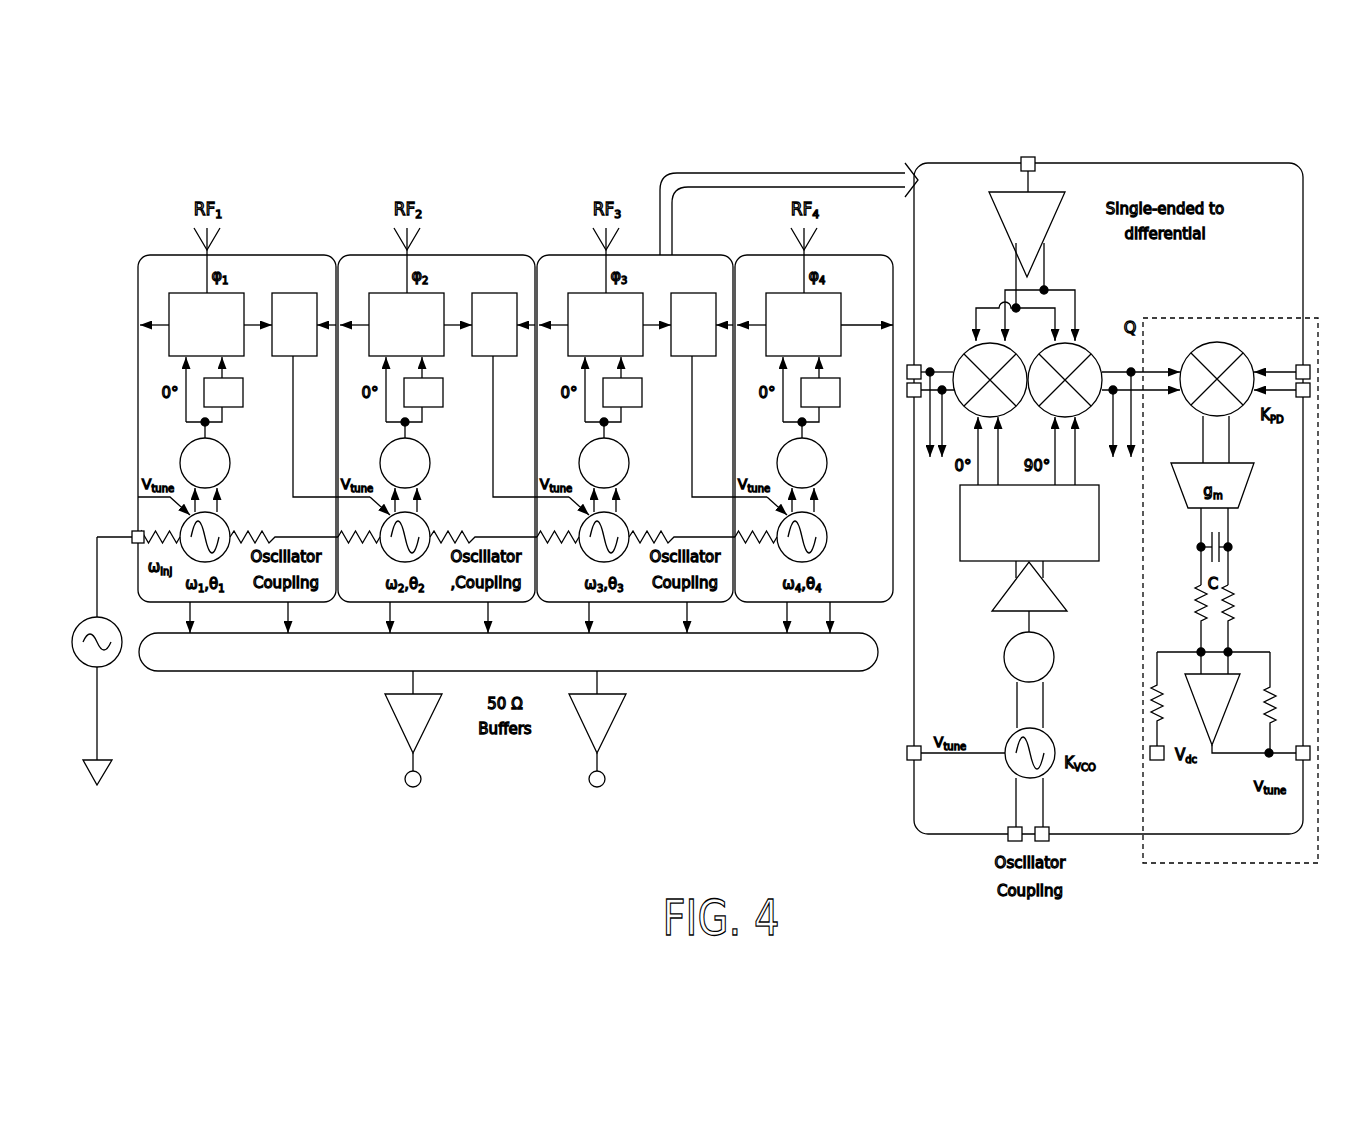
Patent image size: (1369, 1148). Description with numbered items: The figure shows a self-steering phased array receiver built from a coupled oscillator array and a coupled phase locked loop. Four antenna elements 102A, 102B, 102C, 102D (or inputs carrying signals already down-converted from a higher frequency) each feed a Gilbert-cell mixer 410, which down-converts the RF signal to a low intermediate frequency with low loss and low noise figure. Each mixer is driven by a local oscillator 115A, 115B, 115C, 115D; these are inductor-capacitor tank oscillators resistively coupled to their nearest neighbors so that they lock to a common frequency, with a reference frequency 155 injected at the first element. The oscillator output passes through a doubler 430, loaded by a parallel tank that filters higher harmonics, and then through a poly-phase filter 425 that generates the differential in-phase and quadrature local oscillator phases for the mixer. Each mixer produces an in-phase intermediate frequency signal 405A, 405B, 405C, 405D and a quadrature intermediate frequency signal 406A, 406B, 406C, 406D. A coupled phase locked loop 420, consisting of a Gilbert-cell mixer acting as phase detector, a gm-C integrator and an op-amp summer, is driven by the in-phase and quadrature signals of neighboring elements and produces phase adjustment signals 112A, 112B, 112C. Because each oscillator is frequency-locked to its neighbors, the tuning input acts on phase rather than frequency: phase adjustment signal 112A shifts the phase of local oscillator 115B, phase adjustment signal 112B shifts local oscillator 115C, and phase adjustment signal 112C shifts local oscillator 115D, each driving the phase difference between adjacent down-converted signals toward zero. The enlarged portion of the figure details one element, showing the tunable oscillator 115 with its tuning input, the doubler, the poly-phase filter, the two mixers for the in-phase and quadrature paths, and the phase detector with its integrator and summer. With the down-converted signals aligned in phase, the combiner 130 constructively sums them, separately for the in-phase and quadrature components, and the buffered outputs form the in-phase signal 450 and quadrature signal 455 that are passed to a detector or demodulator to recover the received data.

The antenna element 102A is at (178, 246).
The antenna element 102B is at (378, 246).
The antenna element 102C is at (577, 246).
The antenna element 102D is at (774, 246).
The Gilbert-cell mixer 410 is at (195, 293).
The coupled phase locked loop 420 is at (290, 293).
The poly-phase filter 425 is at (975, 561).
The doubler 430 is at (229, 469).
The local oscillator 115A is at (222, 520).
The local oscillator 115B is at (422, 520).
The local oscillator 115C is at (621, 520).
The local oscillator 115D is at (819, 520).
The oscillator 115 is at (1050, 737).
The in-phase intermediate frequency signal 405A is at (152, 448).
The in-phase intermediate frequency signal 405B is at (352, 448).
The in-phase intermediate frequency signal 405C is at (738, 448).
The in-phase intermediate frequency signal 405D is at (1038, 448).
The quadrature intermediate frequency signal 406A is at (285, 448).
The quadrature intermediate frequency signal 406B is at (485, 448).
The quadrature intermediate frequency signal 406C is at (888, 448).
The quadrature intermediate frequency signal 406D is at (904, 339).
The phase adjustment signal 112A is at (331, 426).
The phase adjustment signal 112B is at (748, 560).
The phase adjustment signal 112C is at (1027, 559).
The combiner 130 is at (508, 652).
The reference frequency 155 is at (114, 660).
The in-phase signal 450 is at (410, 745).
The quadrature signal 455 is at (606, 745).